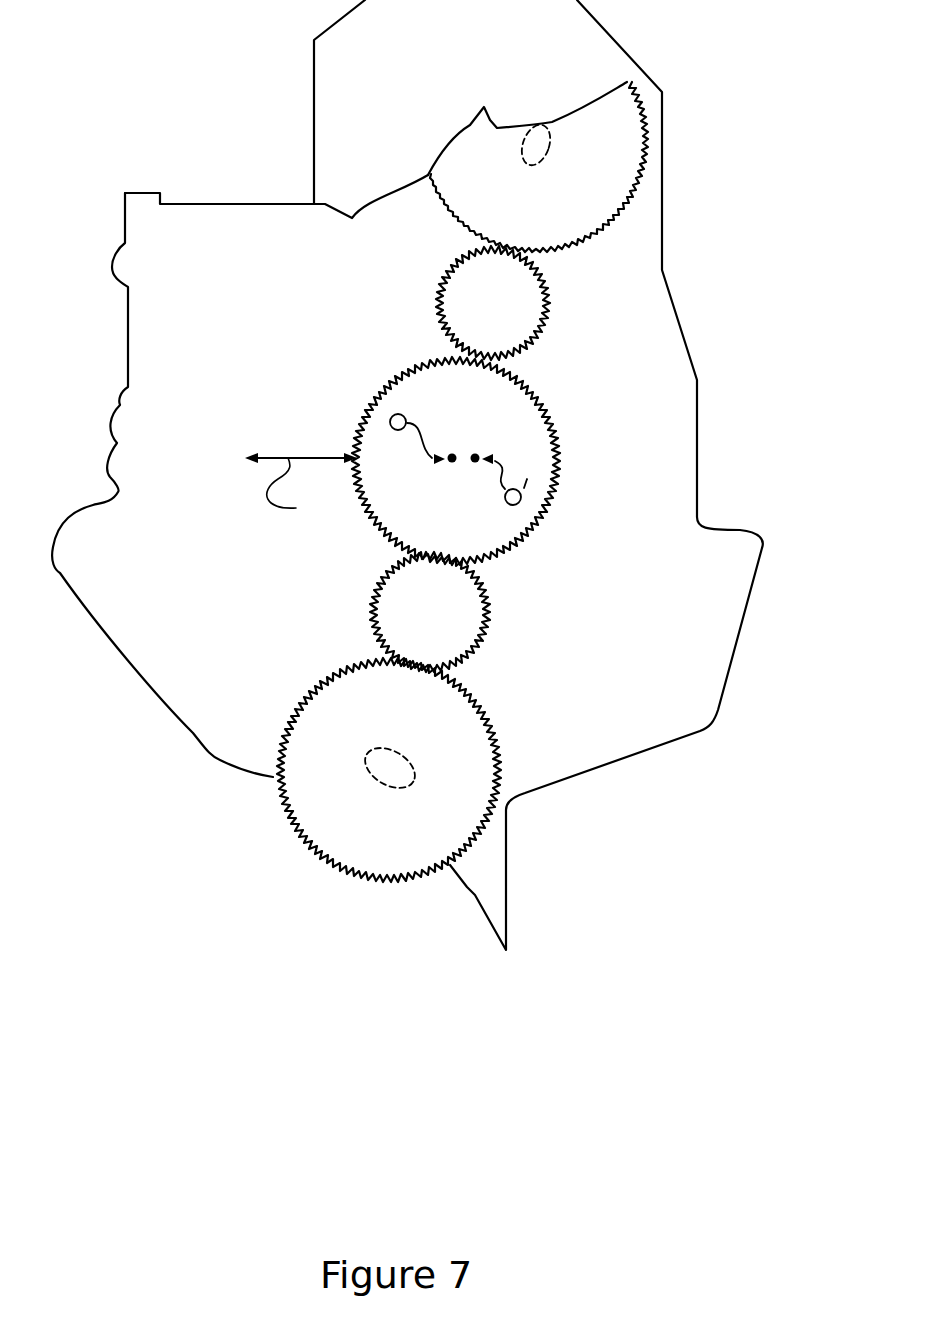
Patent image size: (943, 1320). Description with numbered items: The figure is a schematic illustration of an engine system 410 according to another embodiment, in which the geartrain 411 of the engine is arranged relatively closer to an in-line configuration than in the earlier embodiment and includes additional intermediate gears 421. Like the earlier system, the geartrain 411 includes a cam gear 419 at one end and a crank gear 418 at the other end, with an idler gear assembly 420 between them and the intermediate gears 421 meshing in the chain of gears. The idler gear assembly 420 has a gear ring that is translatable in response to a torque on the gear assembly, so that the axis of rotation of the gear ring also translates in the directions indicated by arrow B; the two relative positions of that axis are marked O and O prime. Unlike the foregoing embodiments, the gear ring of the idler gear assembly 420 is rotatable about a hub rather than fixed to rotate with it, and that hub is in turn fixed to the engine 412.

The engine system 410 is at (185, 158).
The geartrain 411 is at (580, 632).
The engine 412 is at (173, 381).
The crank gear 418 is at (325, 851).
The cam gear 419 is at (640, 148).
The idler gear assembly 420 is at (543, 460).
The intermediate gears 421 is at (528, 333).